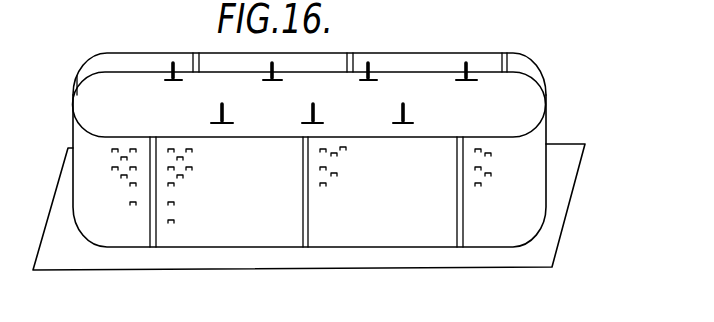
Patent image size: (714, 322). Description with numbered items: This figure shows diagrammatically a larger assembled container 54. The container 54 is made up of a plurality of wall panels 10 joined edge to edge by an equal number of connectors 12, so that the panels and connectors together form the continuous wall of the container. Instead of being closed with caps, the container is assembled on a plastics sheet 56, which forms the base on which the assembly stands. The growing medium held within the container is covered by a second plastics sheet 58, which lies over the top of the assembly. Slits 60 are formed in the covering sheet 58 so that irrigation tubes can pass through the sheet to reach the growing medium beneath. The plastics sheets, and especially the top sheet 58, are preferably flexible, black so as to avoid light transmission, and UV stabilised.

The wall panel 10 is at (359, 53).
The connector 12 is at (193, 62).
The larger assembled container 54 is at (534, 54).
The plastics sheet 56 is at (559, 158).
The second plastics sheet 58 is at (522, 97).
The slit 60 is at (308, 121).